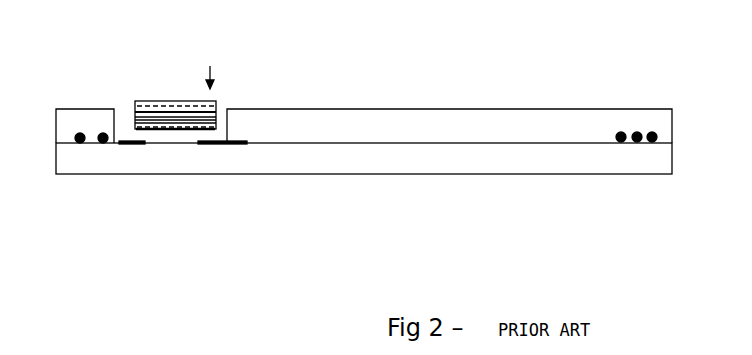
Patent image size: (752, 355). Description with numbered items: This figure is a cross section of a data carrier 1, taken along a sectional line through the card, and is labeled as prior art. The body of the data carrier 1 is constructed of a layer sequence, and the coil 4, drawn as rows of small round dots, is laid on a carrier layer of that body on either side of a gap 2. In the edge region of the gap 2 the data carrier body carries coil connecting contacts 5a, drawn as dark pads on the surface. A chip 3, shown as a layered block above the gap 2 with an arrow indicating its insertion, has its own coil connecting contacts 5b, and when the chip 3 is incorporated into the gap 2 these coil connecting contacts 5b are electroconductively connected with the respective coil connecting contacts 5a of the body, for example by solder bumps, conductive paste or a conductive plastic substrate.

The data carrier 1 is at (659, 174).
The gap 2 is at (121, 132).
The chip 3 is at (217, 110).
The coil 4 is at (80, 134).
The coil connecting contacts 5a is at (131, 143).
The coil connecting contacts 5b is at (197, 128).